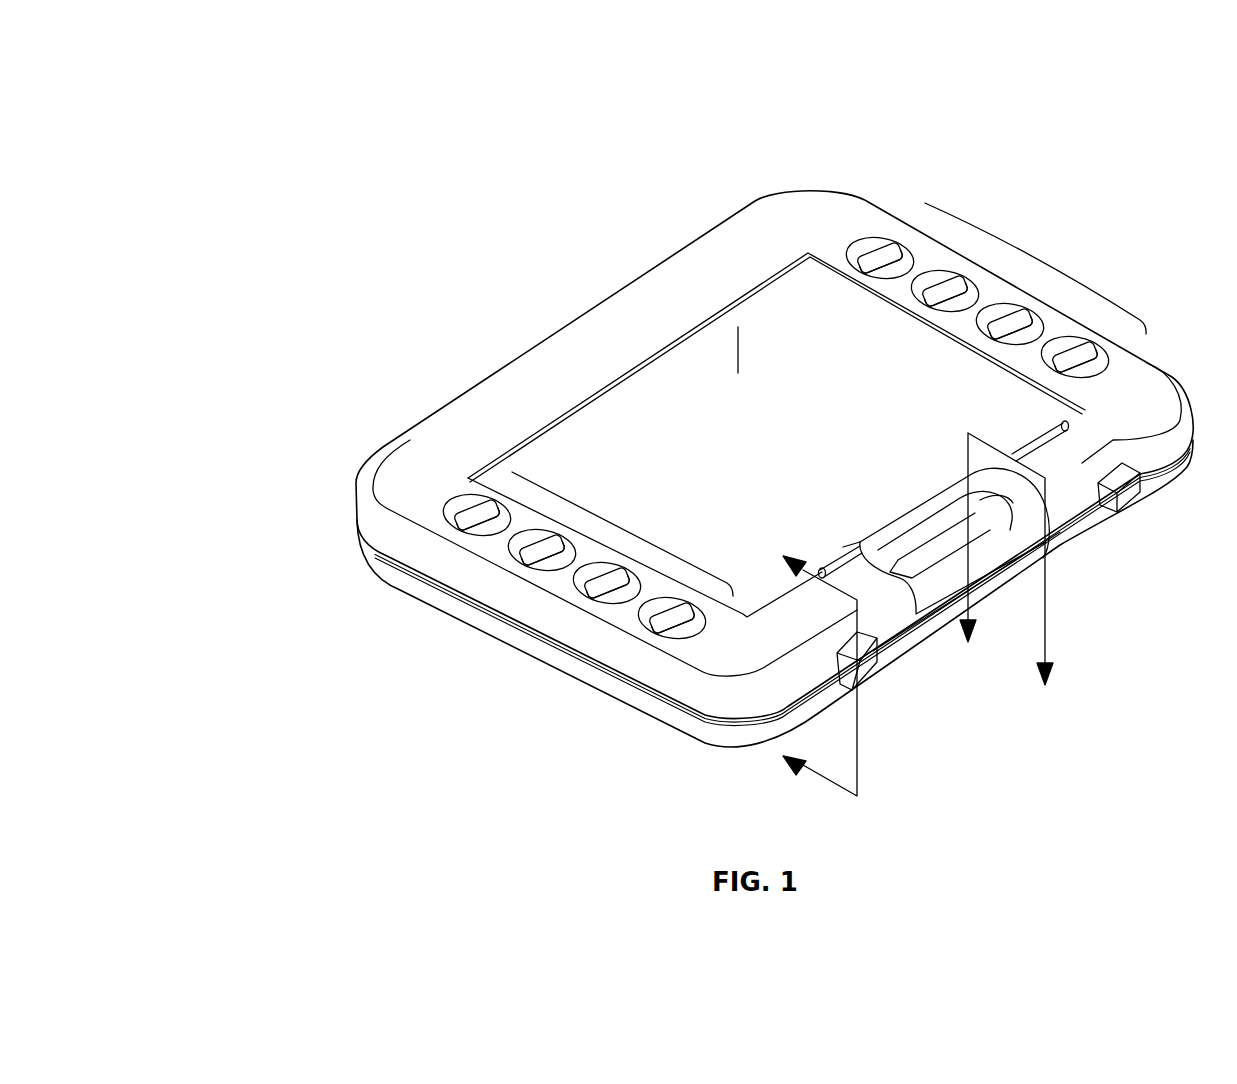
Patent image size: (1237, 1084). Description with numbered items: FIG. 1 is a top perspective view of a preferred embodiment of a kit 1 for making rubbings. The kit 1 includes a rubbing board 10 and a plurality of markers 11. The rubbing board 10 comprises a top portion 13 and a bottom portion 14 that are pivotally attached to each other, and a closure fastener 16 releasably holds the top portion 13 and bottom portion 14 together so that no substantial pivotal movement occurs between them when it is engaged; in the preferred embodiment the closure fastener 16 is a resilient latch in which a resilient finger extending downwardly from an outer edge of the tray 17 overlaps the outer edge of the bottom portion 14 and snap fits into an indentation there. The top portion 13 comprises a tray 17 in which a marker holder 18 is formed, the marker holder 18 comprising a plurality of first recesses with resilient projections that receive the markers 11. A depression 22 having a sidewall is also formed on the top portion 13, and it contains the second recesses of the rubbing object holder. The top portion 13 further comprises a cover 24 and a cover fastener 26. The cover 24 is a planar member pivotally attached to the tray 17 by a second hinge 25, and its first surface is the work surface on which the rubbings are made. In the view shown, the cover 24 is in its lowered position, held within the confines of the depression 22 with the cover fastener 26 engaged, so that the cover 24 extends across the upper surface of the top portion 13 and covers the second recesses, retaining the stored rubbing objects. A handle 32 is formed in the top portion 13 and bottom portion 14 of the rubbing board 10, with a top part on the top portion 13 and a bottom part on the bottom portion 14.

The kit 1 is at (503, 258).
The rubbing board 10 is at (842, 180).
The markers 11 is at (1042, 375).
The top portion 13 is at (430, 415).
The bottom portion 14 is at (587, 687).
The closure fastener 16 is at (874, 673).
The tray 17 is at (430, 553).
The marker holder 18 is at (829, 399).
The depression 22 is at (738, 327).
The cover 24 is at (797, 298).
The second hinge 25 is at (467, 478).
The cover fastener 26 is at (1003, 457).
The handle 32 is at (932, 620).